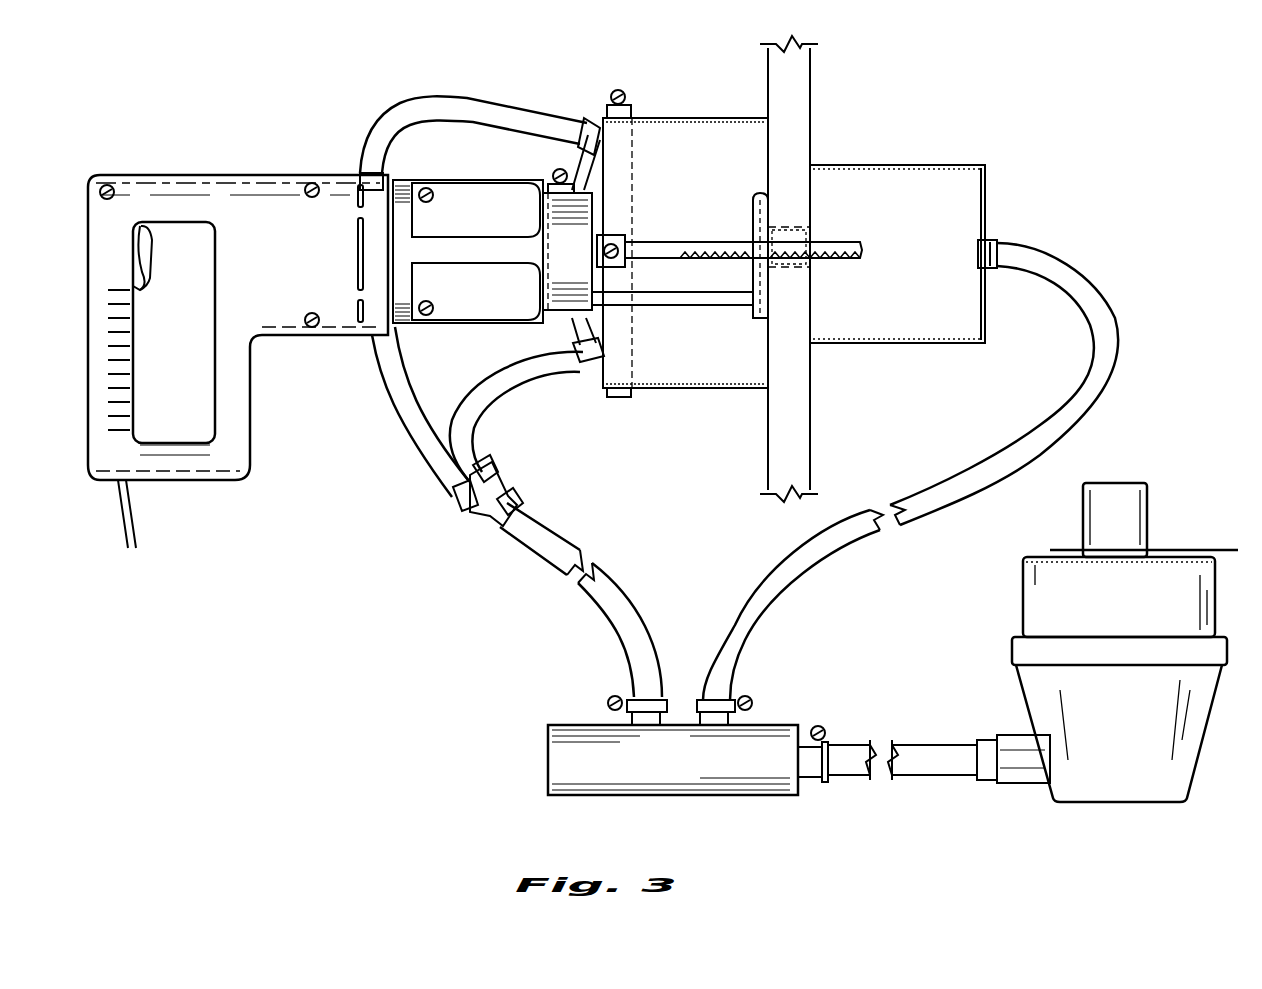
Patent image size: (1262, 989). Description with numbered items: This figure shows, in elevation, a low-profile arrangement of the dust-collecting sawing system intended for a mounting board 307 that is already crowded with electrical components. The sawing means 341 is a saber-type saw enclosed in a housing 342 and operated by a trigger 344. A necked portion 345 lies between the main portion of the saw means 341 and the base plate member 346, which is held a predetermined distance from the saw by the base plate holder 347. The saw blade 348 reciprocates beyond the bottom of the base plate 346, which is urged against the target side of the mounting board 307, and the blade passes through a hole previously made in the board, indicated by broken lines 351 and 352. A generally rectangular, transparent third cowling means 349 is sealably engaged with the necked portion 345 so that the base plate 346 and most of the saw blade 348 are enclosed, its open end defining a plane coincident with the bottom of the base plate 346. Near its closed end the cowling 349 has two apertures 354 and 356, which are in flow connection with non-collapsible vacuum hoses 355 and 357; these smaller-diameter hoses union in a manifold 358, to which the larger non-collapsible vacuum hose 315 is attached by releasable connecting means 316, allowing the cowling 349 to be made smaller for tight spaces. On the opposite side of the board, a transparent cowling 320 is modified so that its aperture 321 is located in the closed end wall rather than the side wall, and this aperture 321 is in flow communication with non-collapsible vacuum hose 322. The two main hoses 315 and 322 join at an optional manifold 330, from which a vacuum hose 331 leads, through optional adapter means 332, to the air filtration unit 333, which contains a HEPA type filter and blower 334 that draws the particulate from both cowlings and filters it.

The saw means 341 is at (243, 172).
The housing 342 is at (308, 270).
The trigger 344 is at (140, 262).
The necked portion 345 is at (543, 182).
The base plate member 346 is at (755, 320).
The base plate holder 347 is at (722, 306).
The saw blade 348 is at (668, 242).
The third cowling means 349 is at (660, 118).
The broken lines 351 is at (795, 225).
The broken lines 352 is at (792, 270).
The aperture 354 is at (603, 148).
The aperture 356 is at (605, 352).
The non-collapsible vacuum hose 355 is at (395, 398).
The non-collapsible vacuum hose 357 is at (470, 440).
The manifold 358 is at (458, 512).
The releasable connecting means 316 is at (512, 498).
The non-collapsible vacuum hose 315 is at (605, 572).
The non-collapsible vacuum hose 322 is at (995, 458).
The aperture 321 is at (978, 253).
The cowling 320 is at (985, 165).
The mounting board 307 is at (812, 88).
The manifold 330 is at (580, 725).
The vacuum hose 331 is at (866, 740).
The adapter means 332 is at (968, 740).
The air filtration unit 333 is at (1023, 596).
The HEPA type filter and blower 334 is at (1110, 483).